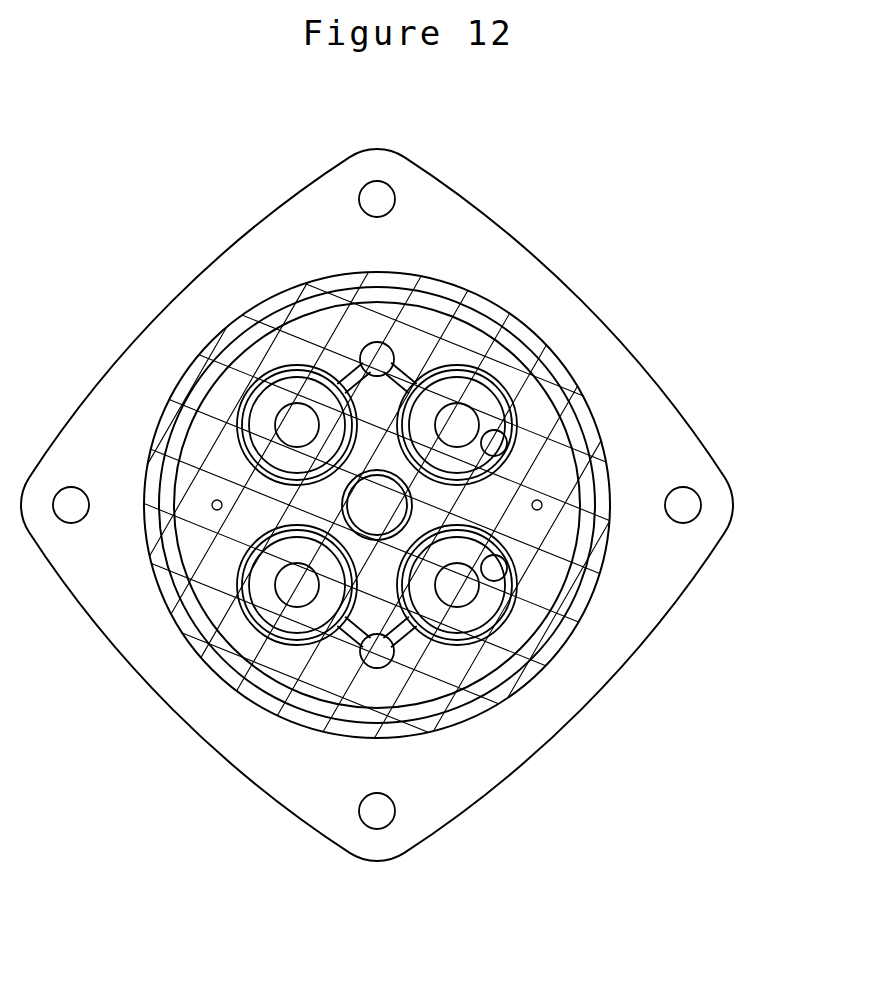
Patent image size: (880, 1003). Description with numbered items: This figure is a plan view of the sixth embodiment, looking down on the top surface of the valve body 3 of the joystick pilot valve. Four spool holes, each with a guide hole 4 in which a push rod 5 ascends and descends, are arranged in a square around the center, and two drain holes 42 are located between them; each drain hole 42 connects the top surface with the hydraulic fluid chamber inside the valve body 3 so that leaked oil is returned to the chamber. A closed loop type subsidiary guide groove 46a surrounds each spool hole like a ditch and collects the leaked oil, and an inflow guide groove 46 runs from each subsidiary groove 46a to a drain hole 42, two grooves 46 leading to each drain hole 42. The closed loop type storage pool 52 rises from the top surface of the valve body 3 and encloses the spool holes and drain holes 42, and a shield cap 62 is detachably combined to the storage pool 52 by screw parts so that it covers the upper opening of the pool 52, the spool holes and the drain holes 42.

The valve body 3 is at (183, 734).
The guide hole 4 is at (495, 428).
The push rod 5 is at (485, 380).
The drain hole 42 is at (378, 342).
The inflow guide groove 46 is at (352, 377).
The subsidiary guide groove 46a is at (510, 384).
The storage pool 52 is at (598, 477).
The shield cap 62 is at (161, 596).